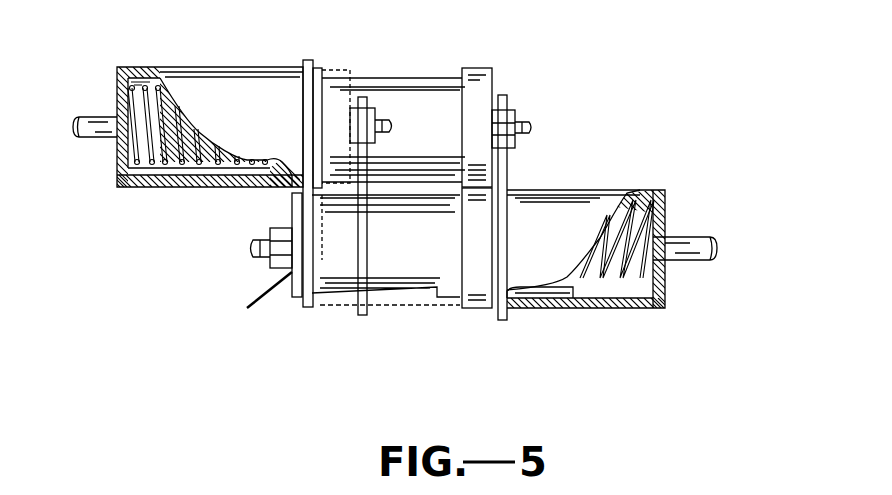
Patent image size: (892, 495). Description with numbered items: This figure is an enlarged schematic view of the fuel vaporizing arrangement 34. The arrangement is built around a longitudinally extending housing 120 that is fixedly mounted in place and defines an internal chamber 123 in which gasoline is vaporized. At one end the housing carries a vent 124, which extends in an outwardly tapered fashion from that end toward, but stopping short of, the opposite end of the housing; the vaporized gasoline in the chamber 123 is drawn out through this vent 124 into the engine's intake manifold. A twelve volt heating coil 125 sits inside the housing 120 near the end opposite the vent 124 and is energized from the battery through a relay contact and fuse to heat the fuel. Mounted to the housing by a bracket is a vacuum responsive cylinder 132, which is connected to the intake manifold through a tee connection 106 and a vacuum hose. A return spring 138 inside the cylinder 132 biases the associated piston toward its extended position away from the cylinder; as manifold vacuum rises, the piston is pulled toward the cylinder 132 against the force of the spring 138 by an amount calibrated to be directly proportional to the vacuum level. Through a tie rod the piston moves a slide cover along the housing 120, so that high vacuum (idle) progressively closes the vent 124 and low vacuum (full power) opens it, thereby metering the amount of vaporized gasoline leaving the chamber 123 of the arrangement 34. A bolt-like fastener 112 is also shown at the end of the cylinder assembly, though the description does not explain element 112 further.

The fuel vaporizing arrangement 34 is at (314, 311).
The tee connection 106 is at (98, 127).
The bolt 112 is at (518, 123).
The housing 120 is at (387, 265).
The internal chamber 123 is at (572, 287).
The vent 124 is at (437, 290).
The heating coil 125 is at (623, 277).
The cylinder 132 is at (230, 90).
The return spring 138 is at (172, 155).